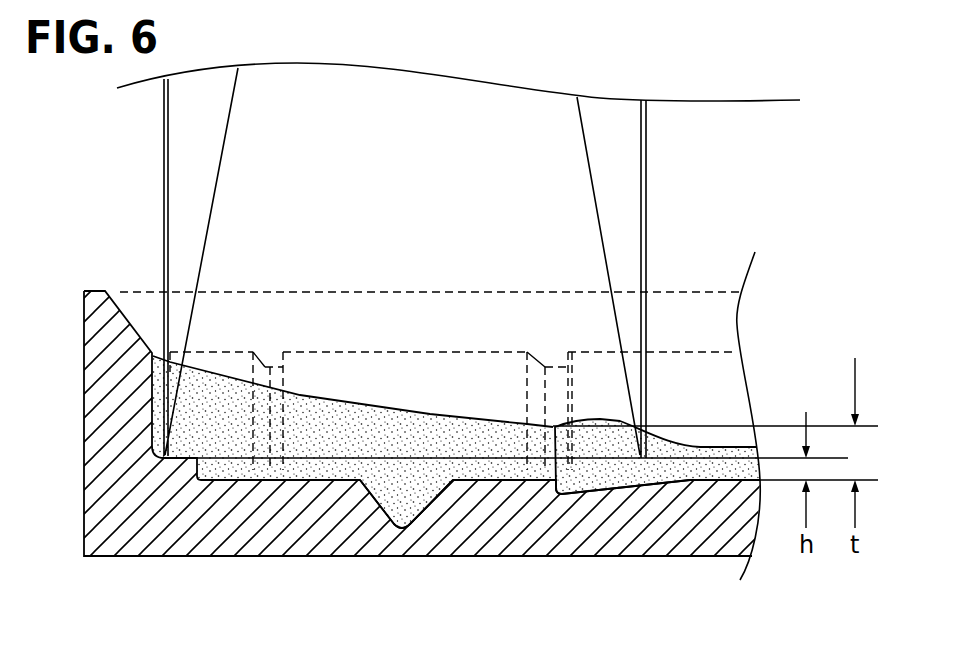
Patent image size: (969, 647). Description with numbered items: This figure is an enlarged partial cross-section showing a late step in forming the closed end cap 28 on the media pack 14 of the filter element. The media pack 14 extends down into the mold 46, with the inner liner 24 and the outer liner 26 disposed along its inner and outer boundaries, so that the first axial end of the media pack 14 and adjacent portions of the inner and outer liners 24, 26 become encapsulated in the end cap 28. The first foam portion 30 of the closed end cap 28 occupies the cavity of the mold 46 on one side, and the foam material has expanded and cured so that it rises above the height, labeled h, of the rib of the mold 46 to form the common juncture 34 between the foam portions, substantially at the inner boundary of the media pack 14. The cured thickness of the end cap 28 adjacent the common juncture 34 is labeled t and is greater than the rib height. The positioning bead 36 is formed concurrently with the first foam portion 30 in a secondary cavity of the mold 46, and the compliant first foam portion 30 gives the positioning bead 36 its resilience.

The media pack 14 is at (392, 153).
The inner liner 24 is at (648, 175).
The outer liner 26 is at (163, 165).
The closed end cap 28 is at (324, 486).
The first foam portion 30 is at (347, 421).
The common juncture 34 is at (554, 430).
The positioning bead 36 is at (402, 503).
The mold 46 is at (102, 487).